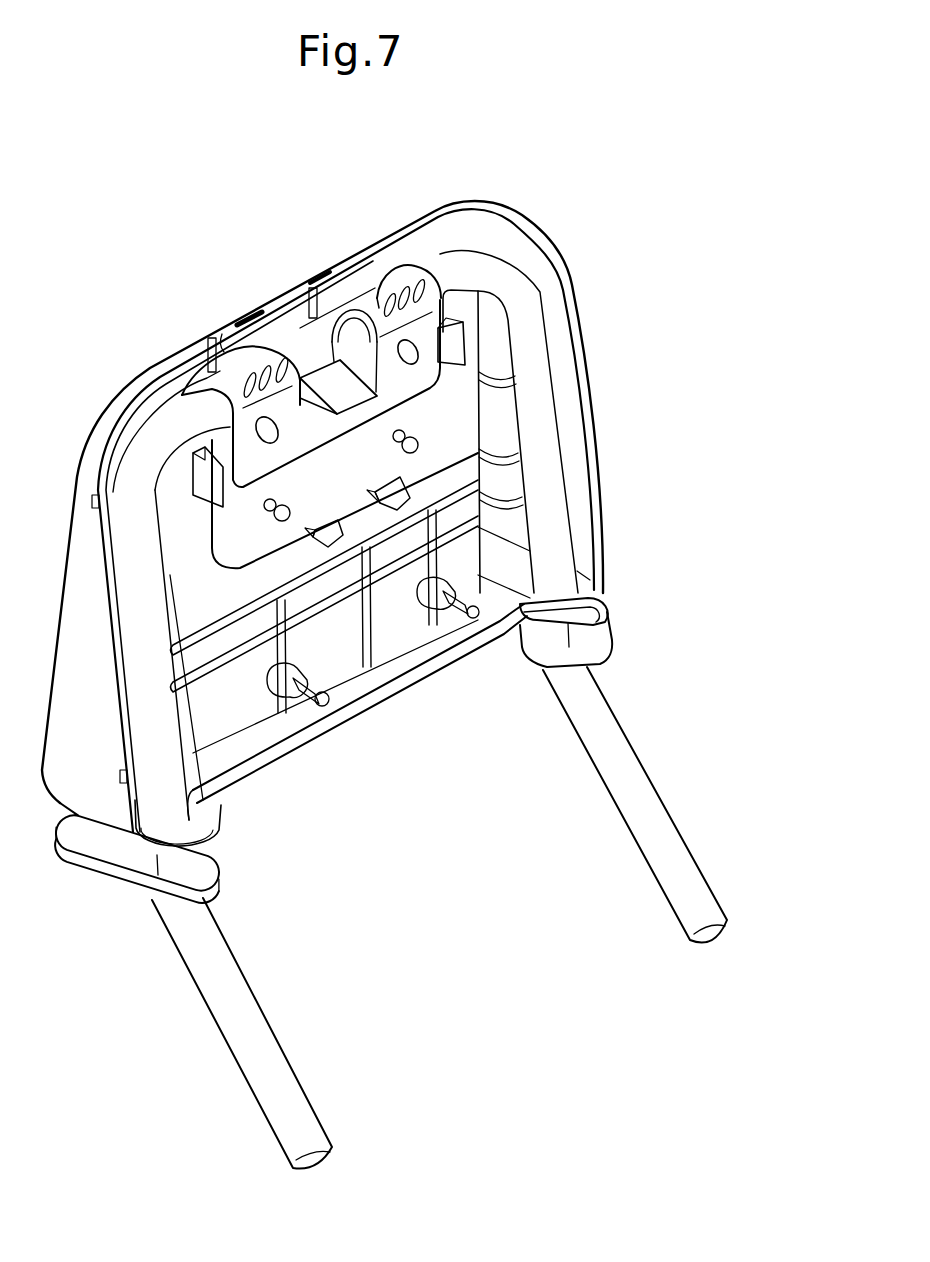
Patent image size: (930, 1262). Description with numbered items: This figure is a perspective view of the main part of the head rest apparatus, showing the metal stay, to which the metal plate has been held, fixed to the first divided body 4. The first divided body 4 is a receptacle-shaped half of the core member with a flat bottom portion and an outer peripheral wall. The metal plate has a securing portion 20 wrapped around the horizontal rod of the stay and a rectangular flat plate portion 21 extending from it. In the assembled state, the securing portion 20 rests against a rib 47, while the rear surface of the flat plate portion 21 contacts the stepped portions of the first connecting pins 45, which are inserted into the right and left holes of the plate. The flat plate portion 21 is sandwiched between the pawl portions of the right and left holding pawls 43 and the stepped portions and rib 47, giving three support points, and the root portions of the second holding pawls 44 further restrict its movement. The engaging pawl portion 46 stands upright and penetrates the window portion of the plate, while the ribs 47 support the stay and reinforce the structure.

The first divided body 4 is at (588, 377).
The securing portion 20 is at (388, 288).
The flat plate portion 21 is at (229, 547).
The holding pawls 43 is at (210, 485).
The second holding pawls 44 is at (318, 520).
The first connecting pins 45 is at (264, 507).
The engaging pawl portion 46 is at (340, 388).
The ribs 47 is at (236, 322).